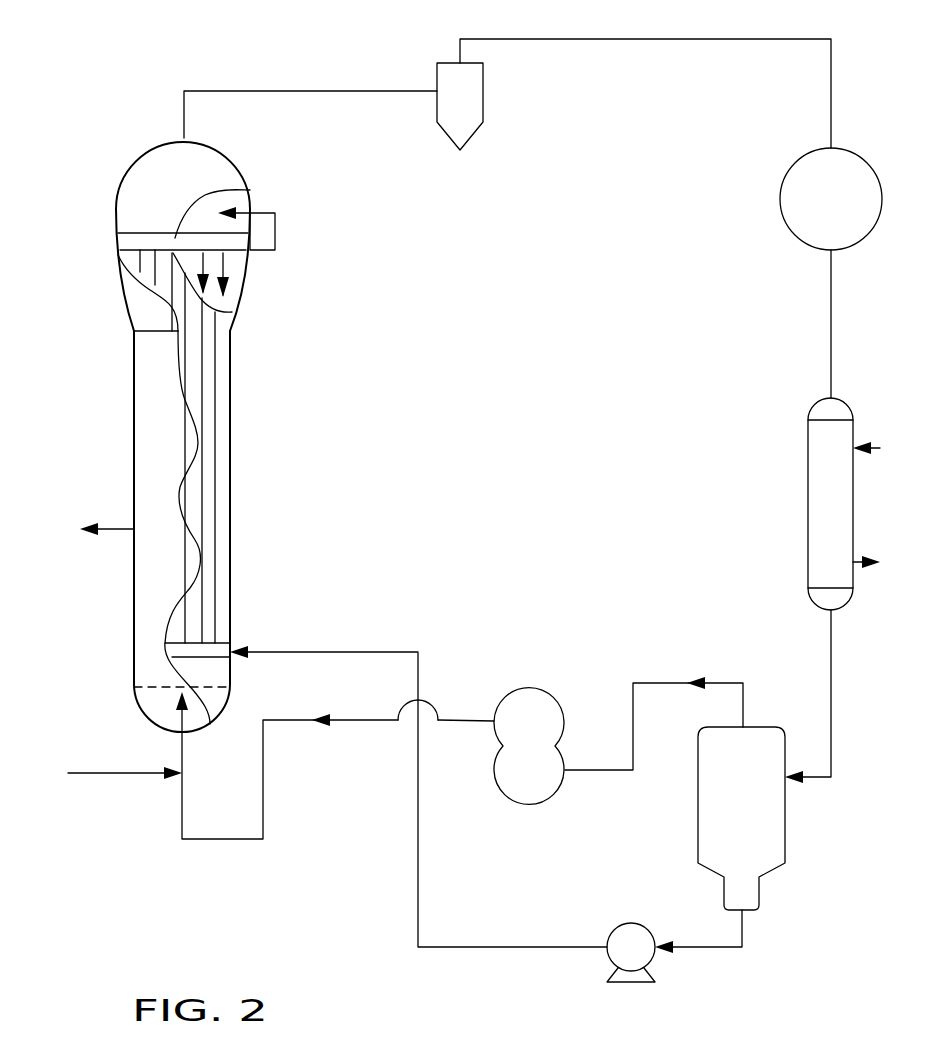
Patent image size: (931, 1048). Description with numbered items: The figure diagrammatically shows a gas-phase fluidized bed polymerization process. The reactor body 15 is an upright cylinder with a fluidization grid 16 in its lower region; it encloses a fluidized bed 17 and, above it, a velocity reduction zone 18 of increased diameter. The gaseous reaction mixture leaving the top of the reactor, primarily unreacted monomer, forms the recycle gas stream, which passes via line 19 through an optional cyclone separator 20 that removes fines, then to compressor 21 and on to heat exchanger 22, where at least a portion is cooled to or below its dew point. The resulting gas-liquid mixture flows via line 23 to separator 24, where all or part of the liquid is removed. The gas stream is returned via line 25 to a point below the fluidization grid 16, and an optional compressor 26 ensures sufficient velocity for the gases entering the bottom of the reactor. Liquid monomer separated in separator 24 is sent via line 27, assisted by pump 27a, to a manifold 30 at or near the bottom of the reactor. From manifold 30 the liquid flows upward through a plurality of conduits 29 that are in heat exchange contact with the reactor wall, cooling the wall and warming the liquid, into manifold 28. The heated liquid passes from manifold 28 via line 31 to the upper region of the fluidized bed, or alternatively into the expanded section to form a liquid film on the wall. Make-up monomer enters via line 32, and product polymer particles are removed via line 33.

The reactor body 15 is at (134, 367).
The fluidization grid 16 is at (130, 700).
The fluidized bed 17 is at (158, 490).
The velocity reduction zone 18 is at (137, 195).
The line 19 is at (281, 91).
The cyclone separator 20 is at (468, 125).
The compressor 21 is at (817, 218).
The heat exchanger 22 is at (830, 515).
The line 23 is at (831, 723).
The separator 24 is at (748, 853).
The line 25 is at (583, 772).
The compressor 26 is at (527, 787).
The line 27 is at (418, 893).
The pump 27a is at (620, 957).
The manifold 28 is at (250, 190).
The conduits 29 is at (217, 442).
The manifold 30 is at (207, 647).
The line 31 is at (275, 232).
The line 32 is at (138, 773).
The line 33 is at (127, 532).